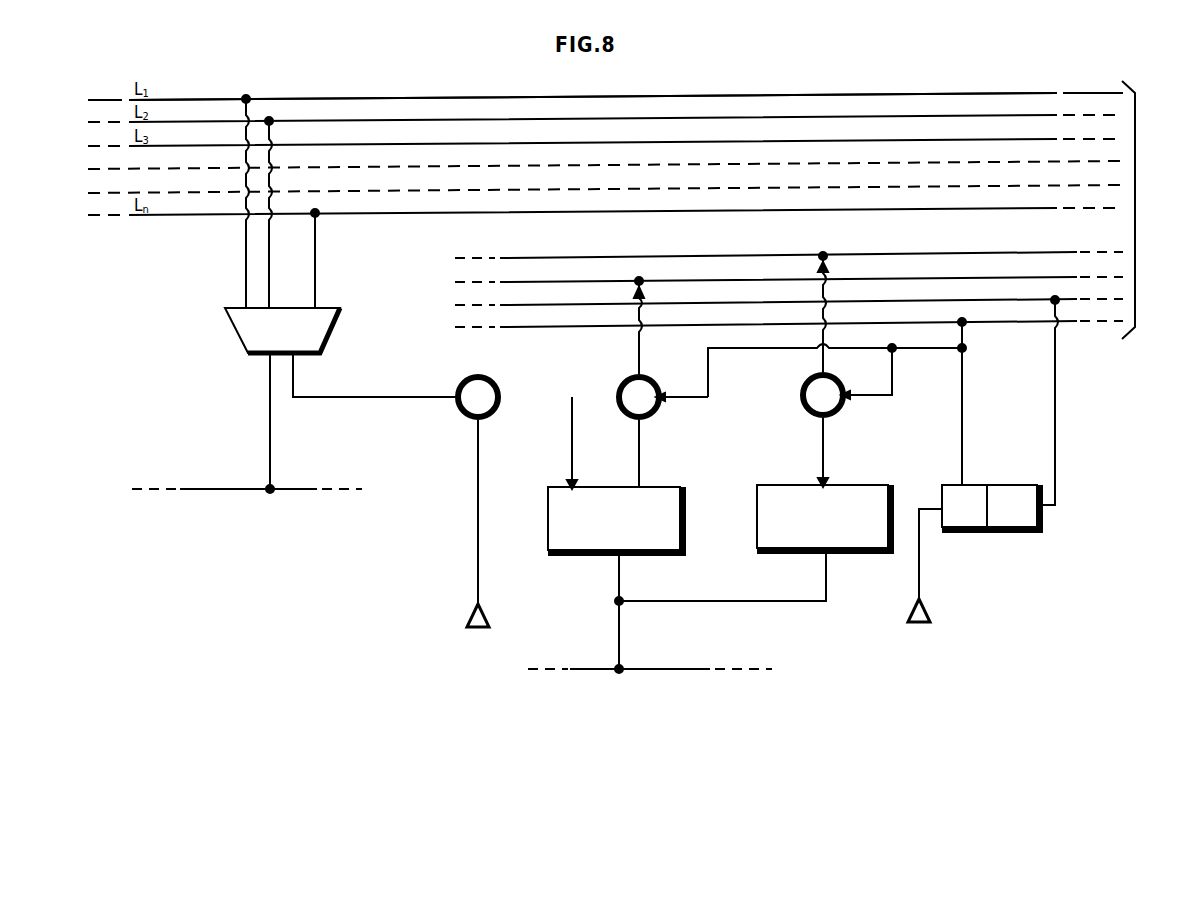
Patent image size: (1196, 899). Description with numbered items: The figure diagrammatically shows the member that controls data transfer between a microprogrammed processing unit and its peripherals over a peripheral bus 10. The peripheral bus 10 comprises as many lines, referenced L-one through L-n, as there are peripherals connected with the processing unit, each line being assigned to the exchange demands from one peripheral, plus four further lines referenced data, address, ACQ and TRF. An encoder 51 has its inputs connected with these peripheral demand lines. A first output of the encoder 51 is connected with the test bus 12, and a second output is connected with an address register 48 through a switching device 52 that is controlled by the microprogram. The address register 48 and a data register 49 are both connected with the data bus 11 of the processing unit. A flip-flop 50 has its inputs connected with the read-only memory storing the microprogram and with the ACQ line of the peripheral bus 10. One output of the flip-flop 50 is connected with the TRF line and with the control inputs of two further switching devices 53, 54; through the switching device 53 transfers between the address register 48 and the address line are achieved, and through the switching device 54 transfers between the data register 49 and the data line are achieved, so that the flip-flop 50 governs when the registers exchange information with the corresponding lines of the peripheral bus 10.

The peripheral bus 10 is at (640, 210).
The data bus 11 is at (640, 672).
The test bus 12 is at (290, 491).
The address register 48 is at (572, 557).
The data register 49 is at (856, 557).
The flip-flop 50 is at (962, 532).
The encoder 51 is at (240, 341).
The switching device 52 is at (463, 412).
The switching device 53 is at (624, 412).
The switching device 54 is at (806, 413).